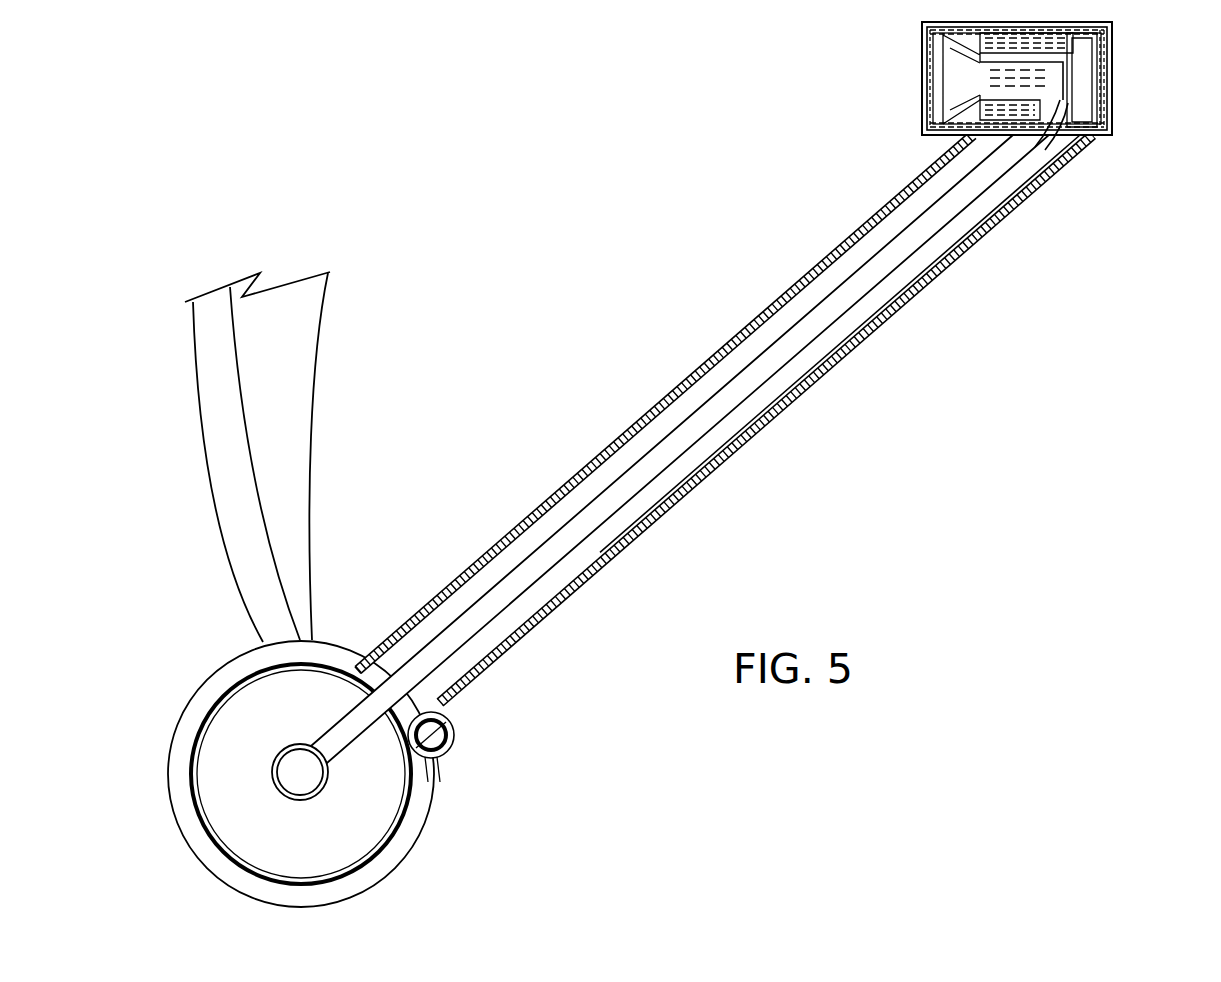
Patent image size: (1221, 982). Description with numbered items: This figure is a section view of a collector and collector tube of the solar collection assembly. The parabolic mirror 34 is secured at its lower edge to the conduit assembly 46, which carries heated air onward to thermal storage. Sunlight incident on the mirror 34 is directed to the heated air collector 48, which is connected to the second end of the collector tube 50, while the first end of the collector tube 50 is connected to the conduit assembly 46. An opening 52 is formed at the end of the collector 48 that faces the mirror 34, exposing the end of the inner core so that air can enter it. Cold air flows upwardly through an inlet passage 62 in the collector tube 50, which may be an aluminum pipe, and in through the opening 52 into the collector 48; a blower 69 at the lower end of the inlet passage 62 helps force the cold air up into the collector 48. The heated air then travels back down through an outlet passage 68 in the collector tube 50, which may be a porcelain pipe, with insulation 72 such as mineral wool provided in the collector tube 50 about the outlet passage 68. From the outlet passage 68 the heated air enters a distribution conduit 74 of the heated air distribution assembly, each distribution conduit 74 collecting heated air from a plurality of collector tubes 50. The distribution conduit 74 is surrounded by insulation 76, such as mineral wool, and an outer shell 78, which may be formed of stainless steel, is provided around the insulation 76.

The parabolic mirror 34 is at (296, 370).
The conduit assembly 46 is at (300, 739).
The heated air collector 48 is at (1035, 86).
The collector tube 50 is at (812, 414).
The opening 52 is at (922, 118).
The inlet passage 62 is at (948, 274).
The outlet passage 68 is at (808, 315).
The blower 69 is at (454, 734).
The insulation 72 is at (733, 371).
The distribution conduit 74 is at (317, 796).
The insulation 76 is at (243, 831).
The outer shell 78 is at (201, 712).